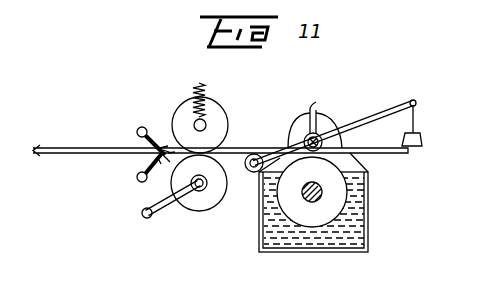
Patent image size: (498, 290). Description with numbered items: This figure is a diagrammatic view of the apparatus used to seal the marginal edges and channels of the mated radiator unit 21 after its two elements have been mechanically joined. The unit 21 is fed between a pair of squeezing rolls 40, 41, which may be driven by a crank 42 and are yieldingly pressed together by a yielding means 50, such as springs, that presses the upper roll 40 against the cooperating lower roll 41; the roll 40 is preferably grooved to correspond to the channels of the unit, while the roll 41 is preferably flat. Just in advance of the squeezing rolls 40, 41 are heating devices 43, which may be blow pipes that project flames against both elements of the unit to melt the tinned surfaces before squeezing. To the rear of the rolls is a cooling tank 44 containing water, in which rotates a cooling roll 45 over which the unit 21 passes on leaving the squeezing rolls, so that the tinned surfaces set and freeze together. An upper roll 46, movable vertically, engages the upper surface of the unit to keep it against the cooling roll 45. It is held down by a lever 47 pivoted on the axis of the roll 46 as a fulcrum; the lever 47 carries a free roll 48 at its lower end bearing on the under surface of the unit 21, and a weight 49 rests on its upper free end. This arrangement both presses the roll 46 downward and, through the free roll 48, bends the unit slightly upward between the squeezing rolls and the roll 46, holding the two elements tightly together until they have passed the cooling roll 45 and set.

The radiator unit 21 is at (220, 140).
The squeezing roll 40 is at (222, 117).
The squeezing roll 41 is at (201, 212).
The crank 42 is at (157, 224).
The heating devices 43 is at (140, 128).
The cooling tank 44 is at (368, 204).
The cooling roll 45 is at (312, 222).
The upper roll 46 is at (313, 112).
The lever 47 is at (390, 101).
The free roll 48 is at (250, 172).
The weight 49 is at (422, 140).
The yielding means 50 is at (194, 86).